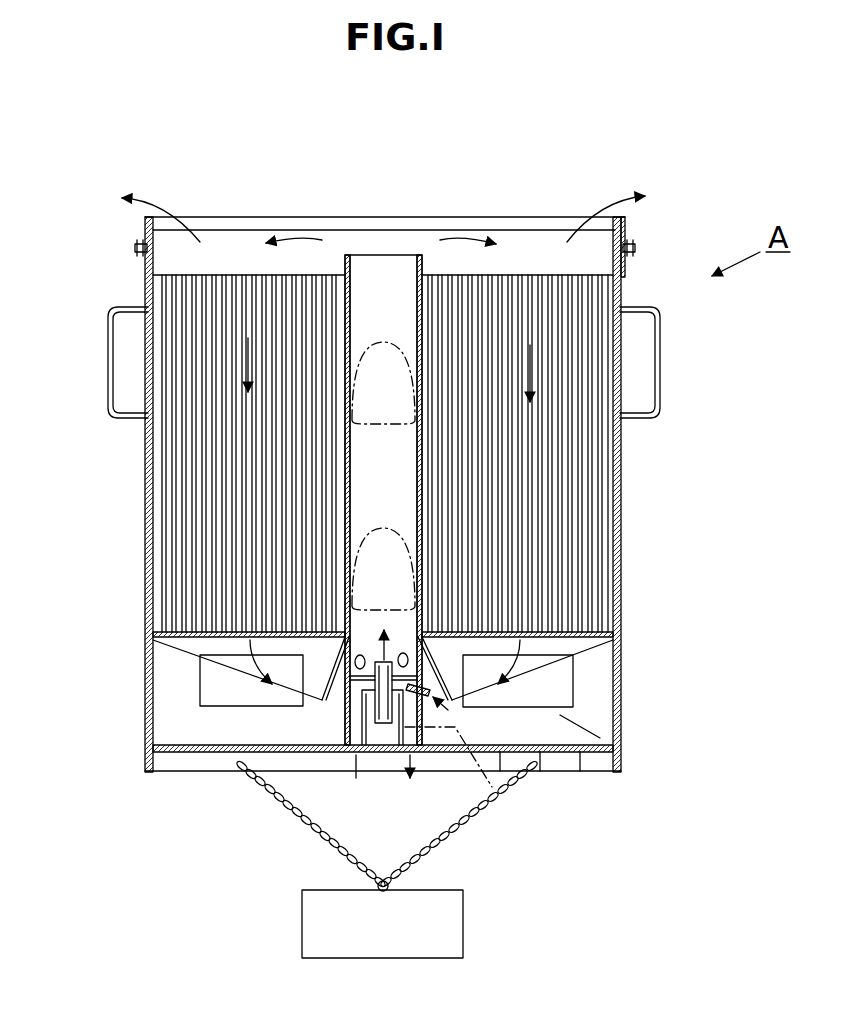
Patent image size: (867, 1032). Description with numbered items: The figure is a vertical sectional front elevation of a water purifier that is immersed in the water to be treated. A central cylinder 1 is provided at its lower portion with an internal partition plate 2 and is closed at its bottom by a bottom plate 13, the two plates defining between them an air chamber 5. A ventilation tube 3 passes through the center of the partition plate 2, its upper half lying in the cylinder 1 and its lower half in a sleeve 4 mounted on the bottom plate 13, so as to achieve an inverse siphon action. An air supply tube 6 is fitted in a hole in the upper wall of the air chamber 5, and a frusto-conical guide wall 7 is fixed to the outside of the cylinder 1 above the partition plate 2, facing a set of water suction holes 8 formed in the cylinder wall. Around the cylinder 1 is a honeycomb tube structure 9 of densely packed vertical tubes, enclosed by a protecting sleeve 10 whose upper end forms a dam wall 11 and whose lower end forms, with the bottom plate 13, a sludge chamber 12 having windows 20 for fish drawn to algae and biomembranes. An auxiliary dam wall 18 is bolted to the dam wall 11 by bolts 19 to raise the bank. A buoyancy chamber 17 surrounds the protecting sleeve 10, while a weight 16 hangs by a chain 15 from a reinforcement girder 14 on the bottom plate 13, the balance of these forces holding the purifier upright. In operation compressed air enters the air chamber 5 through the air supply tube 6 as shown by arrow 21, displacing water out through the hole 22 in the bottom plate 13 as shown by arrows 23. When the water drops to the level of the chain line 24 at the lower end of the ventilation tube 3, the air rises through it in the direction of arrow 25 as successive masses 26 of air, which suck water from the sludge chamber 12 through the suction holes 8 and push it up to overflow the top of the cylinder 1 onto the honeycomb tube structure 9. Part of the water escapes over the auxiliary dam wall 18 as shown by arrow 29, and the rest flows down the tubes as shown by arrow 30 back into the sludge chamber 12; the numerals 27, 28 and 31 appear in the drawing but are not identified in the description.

The cylinder 1 is at (380, 270).
The internal partition plate 2 is at (337, 680).
The ventilation tube 3 is at (384, 662).
The sleeve 4 is at (413, 748).
The air chamber 5 is at (350, 716).
The air supply tube 6 is at (480, 700).
The frusto-conical guide wall 7 is at (440, 650).
The water suction holes 8 is at (340, 662).
The honeycomb tube structure 9 is at (570, 511).
The protecting sleeve 10 is at (621, 455).
The dam wall 11 is at (523, 245).
The sludge chamber 12 is at (598, 735).
The bottom plate 13 is at (588, 758).
The reinforcement girder 14 is at (514, 755).
The chain 15 is at (475, 818).
The weight 16 is at (455, 922).
The buoyancy chamber 17 is at (645, 386).
The auxiliary dam wall 18 is at (626, 222).
The bolts 19 is at (636, 249).
The windows 20 is at (212, 687).
The arrow 21 is at (538, 757).
The hole 22 is at (350, 747).
The arrows 23 is at (354, 764).
The chain line 24 is at (485, 792).
The arrow 25 is at (345, 638).
The masses of air 26 is at (362, 553).
The burner housing 27 is at (335, 705).
The flow arrow 28 is at (301, 238).
The arrow 29 is at (165, 205).
The arrow 30 is at (248, 360).
The flow arrow 31 is at (255, 665).